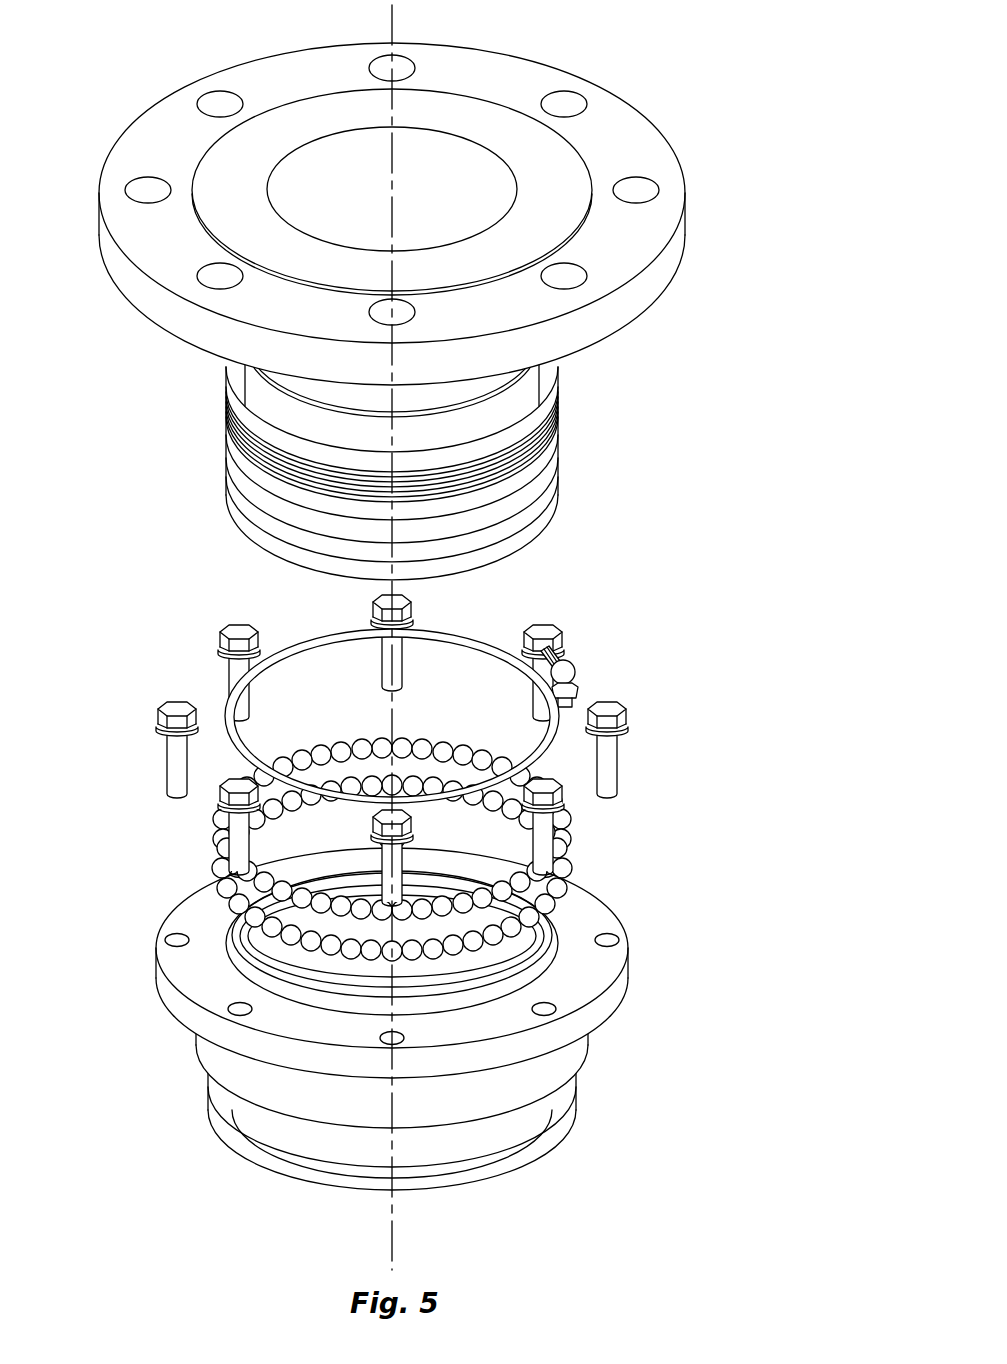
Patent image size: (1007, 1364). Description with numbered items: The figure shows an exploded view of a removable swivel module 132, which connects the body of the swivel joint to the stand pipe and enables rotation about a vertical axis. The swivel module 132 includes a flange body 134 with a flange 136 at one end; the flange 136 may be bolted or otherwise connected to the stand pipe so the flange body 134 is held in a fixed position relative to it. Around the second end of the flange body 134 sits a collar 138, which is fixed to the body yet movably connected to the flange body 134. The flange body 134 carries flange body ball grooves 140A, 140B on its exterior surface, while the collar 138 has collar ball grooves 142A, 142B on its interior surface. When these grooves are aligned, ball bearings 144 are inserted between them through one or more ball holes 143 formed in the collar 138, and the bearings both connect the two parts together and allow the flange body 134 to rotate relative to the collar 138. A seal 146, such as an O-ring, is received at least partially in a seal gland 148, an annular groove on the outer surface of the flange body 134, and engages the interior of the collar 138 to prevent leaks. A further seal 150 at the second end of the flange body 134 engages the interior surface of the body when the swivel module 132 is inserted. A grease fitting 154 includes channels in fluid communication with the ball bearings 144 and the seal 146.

The swivel module 132 is at (387, 637).
The flange body 134 is at (625, 313).
The flange 136 is at (636, 137).
The collar 138 is at (371, 957).
The flange body ball groove 140A is at (548, 462).
The flange body ball groove 140B is at (548, 497).
The collar ball groove 142A is at (243, 933).
The collar ball groove 142B is at (262, 956).
The ball hole 143 is at (450, 930).
The ball bearings 144 is at (558, 872).
The seal 146 is at (538, 753).
The seal gland 148 is at (552, 428).
The seal 150 is at (548, 1110).
The grease fitting 154 is at (568, 667).